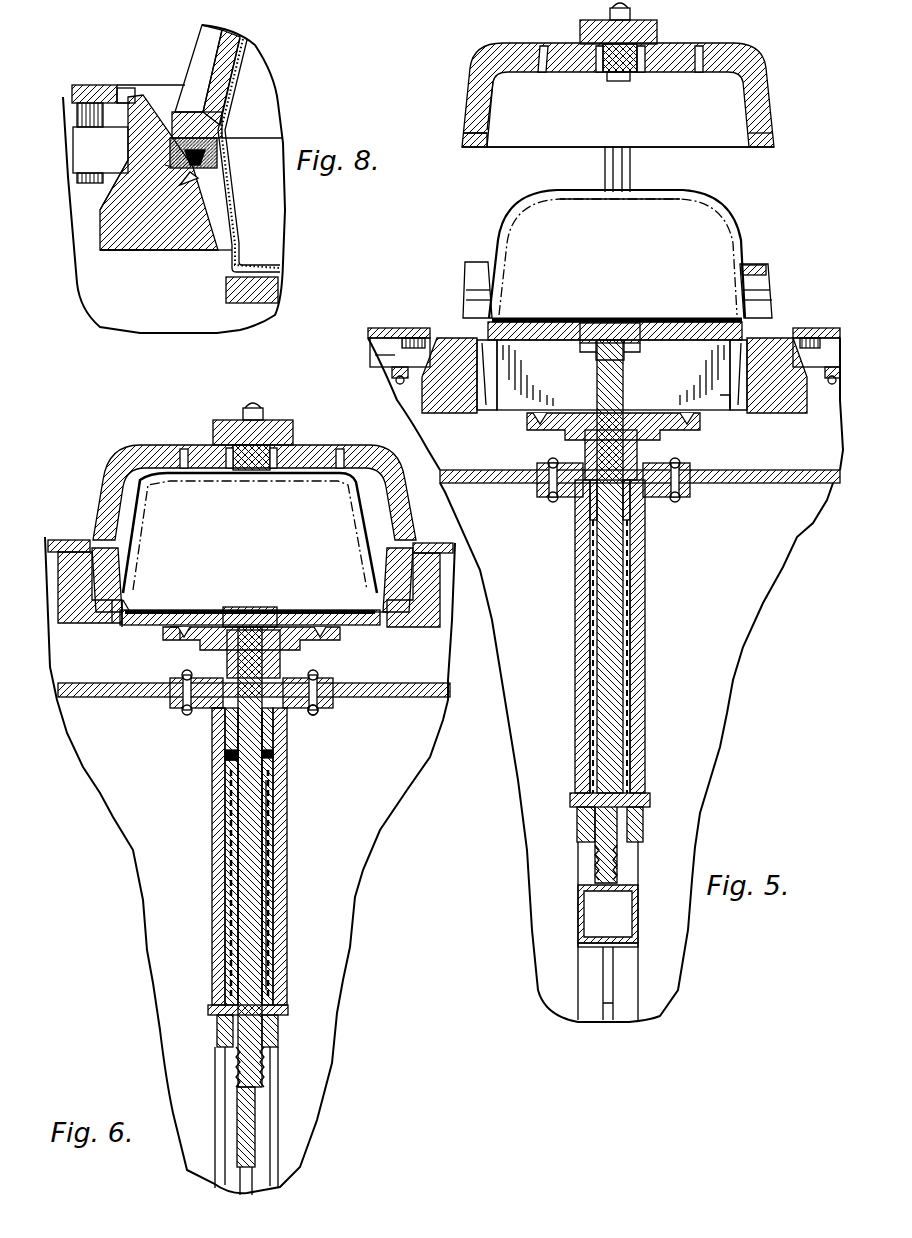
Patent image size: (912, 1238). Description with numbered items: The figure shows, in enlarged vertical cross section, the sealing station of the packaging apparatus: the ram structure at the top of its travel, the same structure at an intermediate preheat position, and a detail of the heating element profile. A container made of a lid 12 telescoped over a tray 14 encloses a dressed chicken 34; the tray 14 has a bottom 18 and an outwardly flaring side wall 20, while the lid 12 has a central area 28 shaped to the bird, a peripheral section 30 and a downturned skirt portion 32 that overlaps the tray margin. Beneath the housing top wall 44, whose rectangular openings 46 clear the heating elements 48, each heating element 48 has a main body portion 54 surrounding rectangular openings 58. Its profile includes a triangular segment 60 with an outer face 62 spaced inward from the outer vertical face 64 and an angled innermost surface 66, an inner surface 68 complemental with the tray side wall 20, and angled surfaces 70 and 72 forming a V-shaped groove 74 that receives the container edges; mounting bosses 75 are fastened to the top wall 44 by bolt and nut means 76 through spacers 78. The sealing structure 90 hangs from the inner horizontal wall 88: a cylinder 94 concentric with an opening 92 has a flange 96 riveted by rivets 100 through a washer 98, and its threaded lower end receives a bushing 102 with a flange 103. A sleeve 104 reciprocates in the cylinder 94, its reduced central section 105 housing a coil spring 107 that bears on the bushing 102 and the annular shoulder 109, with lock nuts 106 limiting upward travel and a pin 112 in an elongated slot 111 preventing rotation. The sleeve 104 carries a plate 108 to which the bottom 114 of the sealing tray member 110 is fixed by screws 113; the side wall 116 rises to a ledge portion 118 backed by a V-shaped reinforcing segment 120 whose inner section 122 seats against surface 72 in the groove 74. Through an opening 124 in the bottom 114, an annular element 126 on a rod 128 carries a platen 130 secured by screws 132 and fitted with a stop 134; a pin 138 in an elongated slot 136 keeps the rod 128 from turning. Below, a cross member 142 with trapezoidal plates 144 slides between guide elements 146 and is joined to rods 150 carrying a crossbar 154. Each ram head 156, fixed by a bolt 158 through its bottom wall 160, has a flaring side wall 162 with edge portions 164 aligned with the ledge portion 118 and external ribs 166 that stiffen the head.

In FIG. 5, the lid 12 is at (717, 203).
In FIG. 5, the tray 14 is at (478, 283).
In FIG. 6, the tray 14 is at (252, 580).
In FIG. 5, the bottom 18 is at (558, 322).
In FIG. 6, the bottom 18 is at (250, 617).
In FIG. 5, the side wall 20 is at (770, 285).
In FIG. 5, the central area 28 is at (528, 198).
In FIG. 5, the peripheral section 30 is at (755, 264).
In FIG. 5, the skirt portion 32 is at (770, 275).
In FIG. 5, the dressed chicken 34 is at (648, 210).
In FIG. 6, the dressed chicken 34 is at (228, 528).
In FIG. 8, the top wall 44 is at (92, 85).
In FIG. 5, the top wall 44 is at (386, 328).
In FIG. 6, the top wall 44 is at (429, 543).
In FIG. 8, the rectangular openings 46 is at (126, 88).
In FIG. 8, the heating element 48 is at (122, 254).
In FIG. 5, the heating element 48 is at (445, 415).
In FIG. 6, the heating element 48 is at (70, 625).
In FIG. 8, the main body portion 54 is at (152, 240).
In FIG. 5, the main body portion 54 is at (770, 414).
In FIG. 6, the main body portion 54 is at (412, 628).
In FIG. 8, the rectangular openings 58 is at (226, 258).
In FIG. 6, the rectangular openings 58 is at (385, 628).
In FIG. 8, the triangular segment 60 is at (176, 97).
In FIG. 8, the outer face 62 is at (125, 141).
In FIG. 8, the outer vertical face 64 is at (106, 212).
In FIG. 8, the innermost surface 66 is at (188, 100).
In FIG. 8, the inner surface 68 is at (229, 212).
In FIG. 8, the surface 70 is at (159, 172).
In FIG. 8, the surface 72 is at (212, 163).
In FIG. 8, the V-shaped groove 74 is at (187, 182).
In FIG. 5, the mounting bosses 75 is at (381, 355).
In FIG. 5, the bolt and nut means 76 is at (398, 383).
In FIG. 5, the spacers 78 is at (375, 343).
In FIG. 5, the inner horizontal wall 88 is at (740, 483).
In FIG. 6, the inner horizontal wall 88 is at (116, 698).
In FIG. 5, the structure 90 is at (647, 583).
In FIG. 6, the structure 90 is at (287, 828).
In FIG. 6, the opening 92 is at (212, 716).
In FIG. 5, the cylinder 94 is at (646, 636).
In FIG. 6, the cylinder 94 is at (287, 797).
In FIG. 6, the flange 96 is at (320, 710).
In FIG. 6, the washer 98 is at (331, 680).
In FIG. 6, the rivets 100 is at (180, 710).
In FIG. 5, the bushing 102 is at (647, 757).
In FIG. 6, the bushing 102 is at (212, 983).
In FIG. 5, the flange 103 is at (650, 797).
In FIG. 6, the flange 103 is at (281, 1014).
In FIG. 5, the sleeve 104 is at (645, 560).
In FIG. 6, the sleeve 104 is at (275, 746).
In FIG. 6, the central section 105 is at (273, 860).
In FIG. 5, the lock nuts 106 is at (645, 832).
In FIG. 6, the lock nuts 106 is at (216, 1027).
In FIG. 6, the coil spring 107 is at (270, 890).
In FIG. 5, the plate 108 is at (545, 432).
In FIG. 6, the plate 108 is at (210, 645).
In FIG. 6, the annular shoulder 109 is at (280, 782).
In FIG. 5, the sealing tray member 110 is at (500, 415).
In FIG. 6, the sealing tray member 110 is at (120, 628).
In FIG. 6, the elongated slot 111 is at (212, 750).
In FIG. 6, the pin 112 is at (212, 765).
In FIG. 5, the screws 113 is at (705, 365).
In FIG. 6, the screws 113 is at (178, 640).
In FIG. 6, the bottom 114 is at (140, 628).
In FIG. 8, the side wall 116 is at (228, 189).
In FIG. 6, the side wall 116 is at (135, 595).
In FIG. 8, the ledge portion 118 is at (222, 132).
In FIG. 8, the reinforcing segment 120 is at (152, 162).
In FIG. 8, the inner section 122 is at (217, 155).
In FIG. 5, the opening 124 is at (632, 358).
In FIG. 6, the opening 124 is at (310, 608).
In FIG. 6, the annular element 126 is at (270, 608).
In FIG. 5, the rod 128 is at (588, 705).
In FIG. 6, the rod 128 is at (280, 660).
In FIG. 5, the platen 130 is at (613, 374).
In FIG. 6, the platen 130 is at (195, 610).
In FIG. 5, the screws 132 is at (590, 352).
In FIG. 6, the screws 132 is at (235, 607).
In FIG. 5, the stop 134 is at (519, 308).
In FIG. 6, the stop 134 is at (140, 600).
In FIG. 6, the elongated slot 136 is at (262, 725).
In FIG. 6, the pin 138 is at (273, 757).
In FIG. 5, the cross member 142 is at (638, 928).
In FIG. 5, the trapezoidal plates 144 is at (613, 960).
In FIG. 5, the guide elements 146 is at (578, 965).
In FIG. 6, the guide elements 146 is at (222, 1067).
In FIG. 5, the rods 150 is at (613, 168).
In FIG. 5, the crossbar 154 is at (660, 27).
In FIG. 6, the crossbar 154 is at (278, 420).
In FIG. 5, the ram head 156 is at (745, 55).
In FIG. 6, the ram head 156 is at (132, 455).
In FIG. 5, the bolt 158 is at (622, 82).
In FIG. 6, the bolt 158 is at (262, 457).
In FIG. 5, the bottom wall 160 is at (580, 72).
In FIG. 5, the side wall 162 is at (494, 122).
In FIG. 5, the edge portions 164 is at (471, 150).
In FIG. 5, the external ribs 166 is at (543, 48).